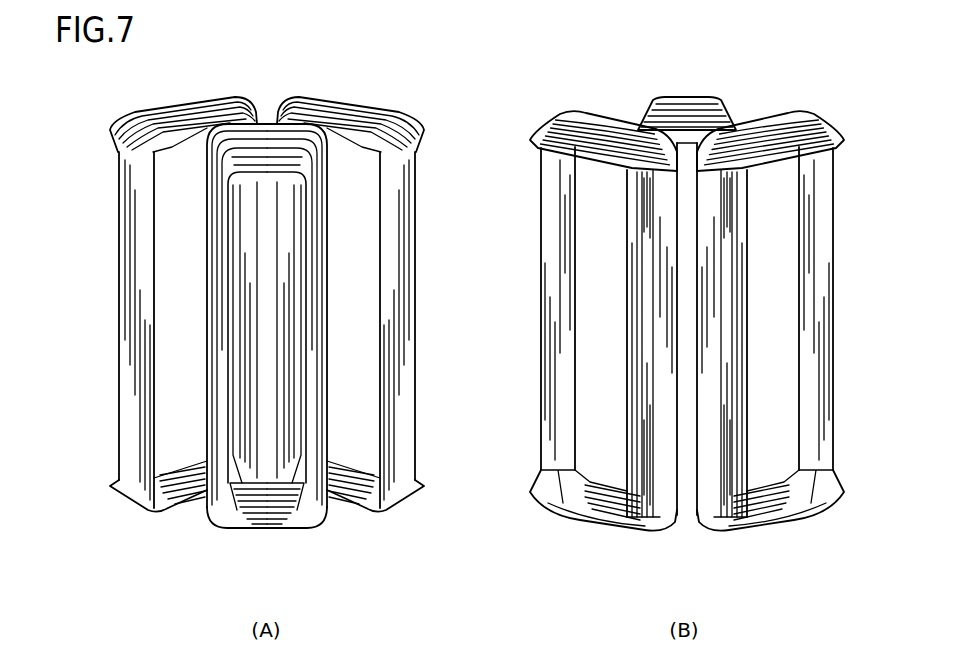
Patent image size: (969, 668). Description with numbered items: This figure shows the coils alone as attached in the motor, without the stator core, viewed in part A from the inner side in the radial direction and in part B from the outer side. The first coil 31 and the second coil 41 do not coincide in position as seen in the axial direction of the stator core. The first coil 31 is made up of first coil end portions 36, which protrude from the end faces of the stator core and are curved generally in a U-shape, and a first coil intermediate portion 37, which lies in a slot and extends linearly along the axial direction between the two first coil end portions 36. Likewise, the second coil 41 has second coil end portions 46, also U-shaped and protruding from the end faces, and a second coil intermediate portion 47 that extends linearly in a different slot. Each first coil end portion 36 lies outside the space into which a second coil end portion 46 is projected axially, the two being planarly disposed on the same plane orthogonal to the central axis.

The first coil 31 is at (136, 90).
The second coil 41 is at (269, 551).
The second coil end portion 46 is at (334, 127).
The second coil intermediate portion 47 is at (334, 200).
The first coil end portion 36 is at (851, 110).
The first coil intermediate portion 37 is at (851, 182).